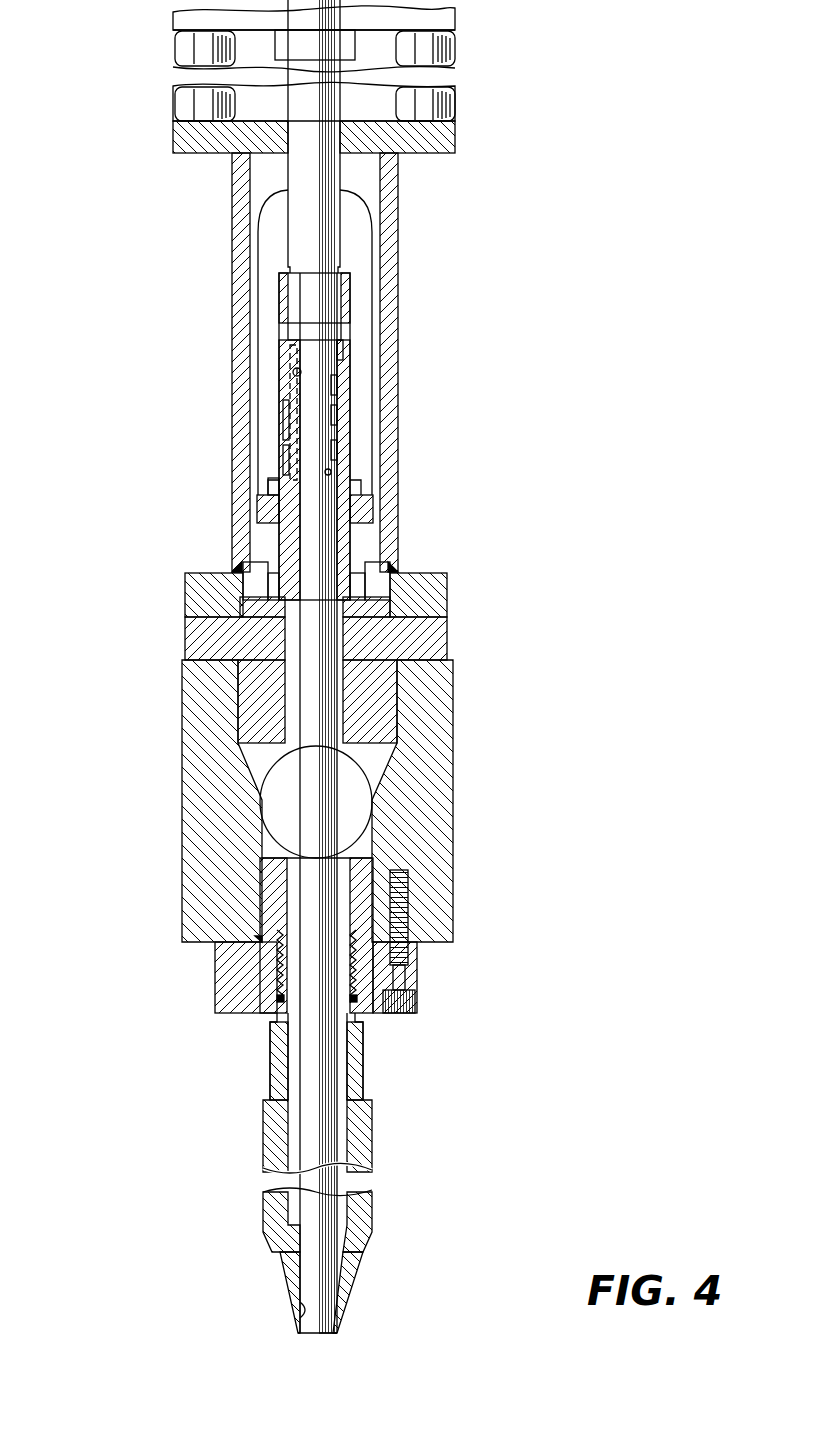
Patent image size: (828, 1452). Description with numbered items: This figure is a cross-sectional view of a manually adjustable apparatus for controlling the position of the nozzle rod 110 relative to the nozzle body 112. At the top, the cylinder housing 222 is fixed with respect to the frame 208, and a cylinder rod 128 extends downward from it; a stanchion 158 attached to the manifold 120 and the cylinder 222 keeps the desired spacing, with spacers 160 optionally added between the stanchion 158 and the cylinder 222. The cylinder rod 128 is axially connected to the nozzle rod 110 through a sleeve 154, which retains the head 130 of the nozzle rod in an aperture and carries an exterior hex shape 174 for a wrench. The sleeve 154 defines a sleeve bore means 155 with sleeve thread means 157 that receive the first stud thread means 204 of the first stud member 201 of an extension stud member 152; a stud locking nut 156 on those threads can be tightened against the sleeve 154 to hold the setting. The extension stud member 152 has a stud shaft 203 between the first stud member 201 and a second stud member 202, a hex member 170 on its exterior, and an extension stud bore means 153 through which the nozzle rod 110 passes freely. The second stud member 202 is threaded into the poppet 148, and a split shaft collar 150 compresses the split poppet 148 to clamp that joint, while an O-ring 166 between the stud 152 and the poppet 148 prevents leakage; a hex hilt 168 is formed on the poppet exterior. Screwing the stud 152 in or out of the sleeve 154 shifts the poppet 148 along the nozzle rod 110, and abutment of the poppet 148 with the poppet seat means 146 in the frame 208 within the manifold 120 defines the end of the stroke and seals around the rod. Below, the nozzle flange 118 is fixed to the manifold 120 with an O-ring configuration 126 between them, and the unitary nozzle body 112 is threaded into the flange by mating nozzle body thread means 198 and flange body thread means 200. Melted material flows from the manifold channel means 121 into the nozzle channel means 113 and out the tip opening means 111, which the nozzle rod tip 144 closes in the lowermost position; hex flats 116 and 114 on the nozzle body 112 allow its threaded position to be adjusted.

The cylinder housing 222 is at (173, 25).
The spacers 160 is at (457, 46).
The stanchion 158 is at (235, 192).
The cylinder rod 128 is at (332, 222).
The sleeve 154 is at (350, 297).
The nozzle rod head 130 is at (340, 333).
The sleeve bore means 155 is at (347, 345).
The first stud thread means 204 is at (290, 365).
The sleeve thread means 157 is at (283, 390).
The stud locking nut 156 is at (277, 423).
The stud shaft 203 is at (283, 463).
The hex member 170 is at (275, 480).
The first stud member 201 is at (343, 385).
The exterior hex shape 174 is at (345, 418).
The extension stud member 152 is at (343, 450).
The extension stud bore means 153 is at (330, 472).
The second stud member 202 is at (352, 490).
The O-ring 166 is at (270, 545).
The split shaft collar 150 is at (355, 522).
The hex hilt 168 is at (375, 555).
The poppet 148 is at (385, 568).
The poppet seat means 146 is at (250, 590).
The frame 208 is at (197, 645).
The nozzle rod 110 is at (311, 681).
The manifold channel means 121 is at (258, 770).
The manifold 120 is at (193, 938).
The O-ring configuration 126 is at (260, 937).
The flange body thread means 200 is at (282, 958).
The nozzle body thread means 198 is at (285, 975).
The nozzle flange 118 is at (238, 1012).
The hex flat 116 is at (363, 1057).
The nozzle channel means 113 is at (338, 1145).
The nozzle body 112 is at (268, 1220).
The hex flat 114 is at (280, 1275).
The tip opening means 111 is at (297, 1303).
The nozzle rod tip 144 is at (330, 1338).